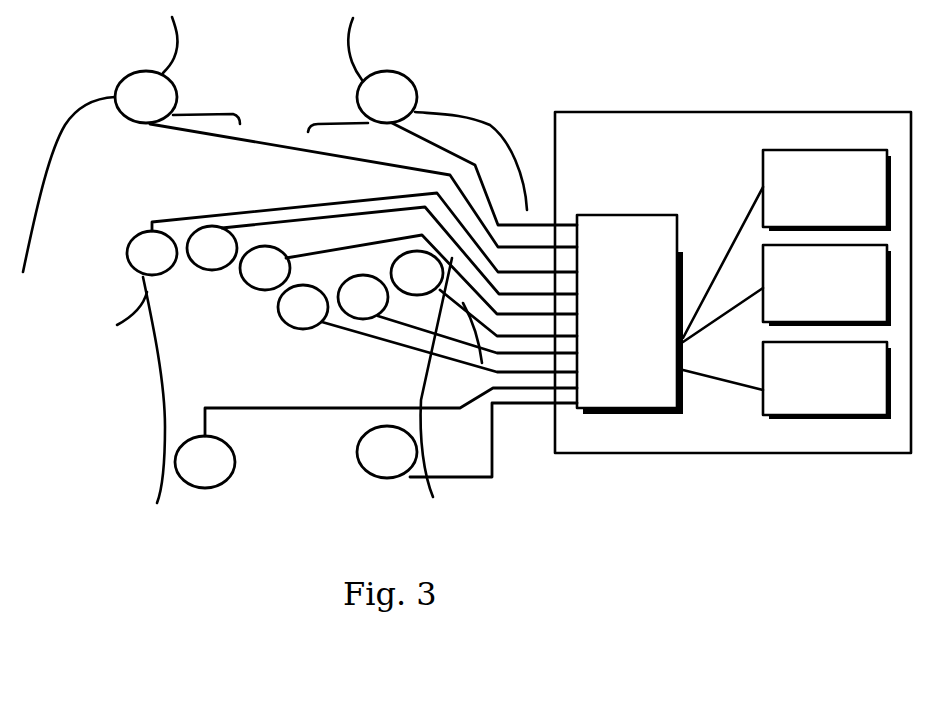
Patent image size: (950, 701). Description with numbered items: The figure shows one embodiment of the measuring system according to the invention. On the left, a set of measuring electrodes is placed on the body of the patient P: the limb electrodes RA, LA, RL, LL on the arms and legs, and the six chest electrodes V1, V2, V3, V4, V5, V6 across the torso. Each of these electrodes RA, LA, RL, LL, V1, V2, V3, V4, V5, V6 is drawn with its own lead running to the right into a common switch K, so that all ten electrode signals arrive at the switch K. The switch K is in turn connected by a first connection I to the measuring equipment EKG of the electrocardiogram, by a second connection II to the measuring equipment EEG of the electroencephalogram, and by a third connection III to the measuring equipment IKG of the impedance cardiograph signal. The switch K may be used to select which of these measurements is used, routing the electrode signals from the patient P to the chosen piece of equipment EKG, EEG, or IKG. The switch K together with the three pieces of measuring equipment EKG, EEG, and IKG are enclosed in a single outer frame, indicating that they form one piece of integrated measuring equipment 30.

The integrated measuring equipment 30 is at (601, 157).
The switch K is at (640, 335).
The patient P is at (162, 392).
The measuring electrode RA is at (346, 159).
The measuring electrode LA is at (467, 148).
The measuring electrode RL is at (376, 438).
The measuring electrode LL is at (467, 440).
The measuring electrode V1 is at (352, 234).
The measuring electrode V2 is at (382, 250).
The measuring electrode V3 is at (408, 274).
The measuring electrode V4 is at (427, 328).
The measuring electrode V5 is at (457, 314).
The measuring electrode V6 is at (484, 293).
The first connection I is at (723, 262).
The second connection II is at (723, 310).
The third connection III is at (723, 370).
The measuring equipment of the electrocardiogram EKG is at (794, 202).
The measuring equipment of the electroencephalogram EEG is at (794, 299).
The measuring equipment of the impedance cardiograph signal IKG is at (796, 395).